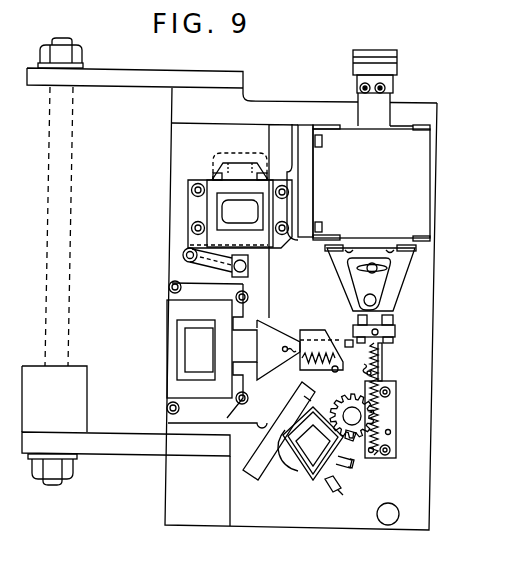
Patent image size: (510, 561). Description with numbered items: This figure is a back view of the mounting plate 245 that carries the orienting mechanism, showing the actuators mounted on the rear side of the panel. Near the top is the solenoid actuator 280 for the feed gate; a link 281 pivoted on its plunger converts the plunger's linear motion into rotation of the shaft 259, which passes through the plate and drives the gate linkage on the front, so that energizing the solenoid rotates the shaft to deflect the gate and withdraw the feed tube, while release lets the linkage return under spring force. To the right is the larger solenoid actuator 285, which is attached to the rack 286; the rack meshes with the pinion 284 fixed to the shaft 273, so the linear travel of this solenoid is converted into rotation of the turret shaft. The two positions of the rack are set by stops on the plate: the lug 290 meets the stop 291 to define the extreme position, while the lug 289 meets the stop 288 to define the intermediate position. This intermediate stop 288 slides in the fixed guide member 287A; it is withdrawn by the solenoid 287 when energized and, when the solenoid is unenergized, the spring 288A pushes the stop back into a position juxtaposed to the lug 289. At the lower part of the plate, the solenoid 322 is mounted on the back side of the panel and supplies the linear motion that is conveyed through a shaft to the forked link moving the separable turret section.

The mounting plate 245 is at (413, 463).
The shaft 259 is at (183, 253).
The shaft 273 is at (355, 415).
The solenoid actuator 280 is at (215, 207).
The link 281 is at (213, 258).
The pinion 284 is at (351, 437).
The solenoid actuator 285 is at (407, 212).
The rack 286 is at (366, 370).
The solenoid 287 is at (192, 345).
The fixed guide member 287A is at (305, 330).
The stop 288 is at (350, 358).
The spring 288A is at (300, 360).
The lug 289 is at (357, 340).
The lug 290 is at (394, 342).
The stop 291 is at (390, 380).
The solenoid 322 is at (312, 460).